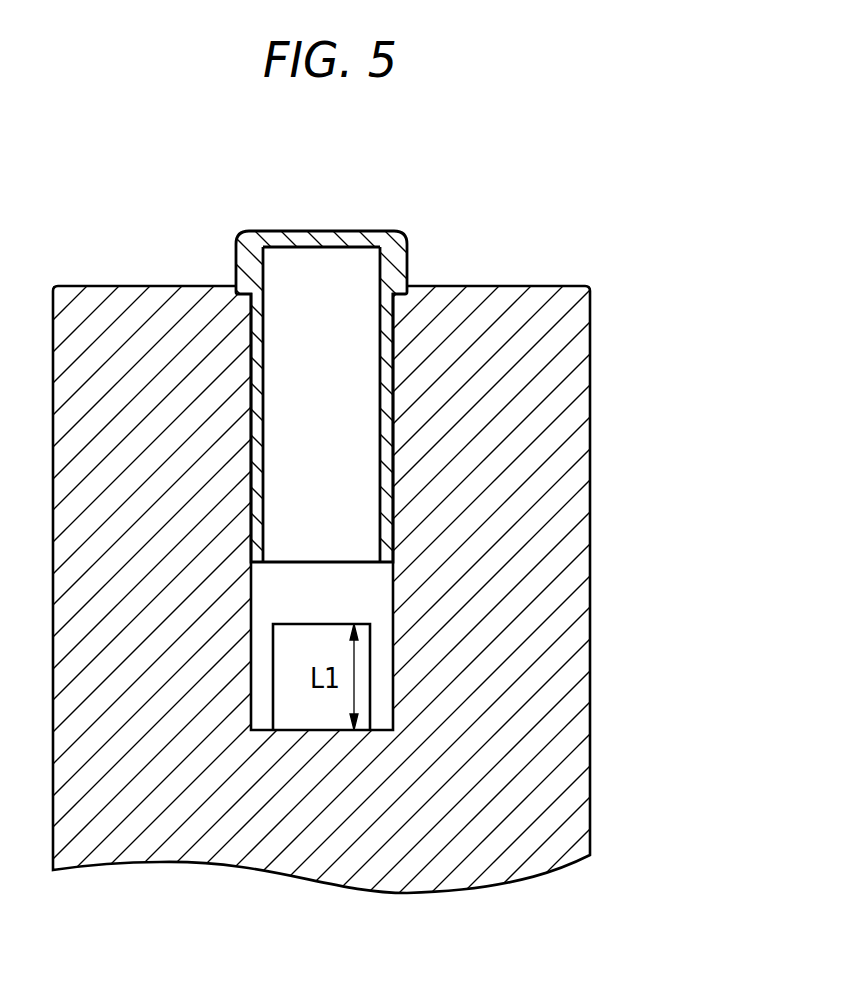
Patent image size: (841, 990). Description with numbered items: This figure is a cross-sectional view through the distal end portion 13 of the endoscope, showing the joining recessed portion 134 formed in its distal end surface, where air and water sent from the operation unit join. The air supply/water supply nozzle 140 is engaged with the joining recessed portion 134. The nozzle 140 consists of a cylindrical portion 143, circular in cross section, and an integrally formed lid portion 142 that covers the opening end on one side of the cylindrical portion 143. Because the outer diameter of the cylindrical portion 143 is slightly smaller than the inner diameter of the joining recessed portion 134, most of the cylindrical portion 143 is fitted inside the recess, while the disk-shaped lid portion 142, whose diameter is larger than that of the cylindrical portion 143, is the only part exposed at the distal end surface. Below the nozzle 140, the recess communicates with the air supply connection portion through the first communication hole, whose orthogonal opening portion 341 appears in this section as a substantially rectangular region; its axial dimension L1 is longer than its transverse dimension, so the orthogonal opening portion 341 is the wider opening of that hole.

The distal end portion 13 is at (578, 508).
The joining recessed portion 134 is at (393, 583).
The orthogonal opening portion 341 is at (276, 697).
The air supply/water supply nozzle 140 is at (420, 495).
The lid portion 142 is at (345, 231).
The cylindrical portion 143 is at (387, 355).